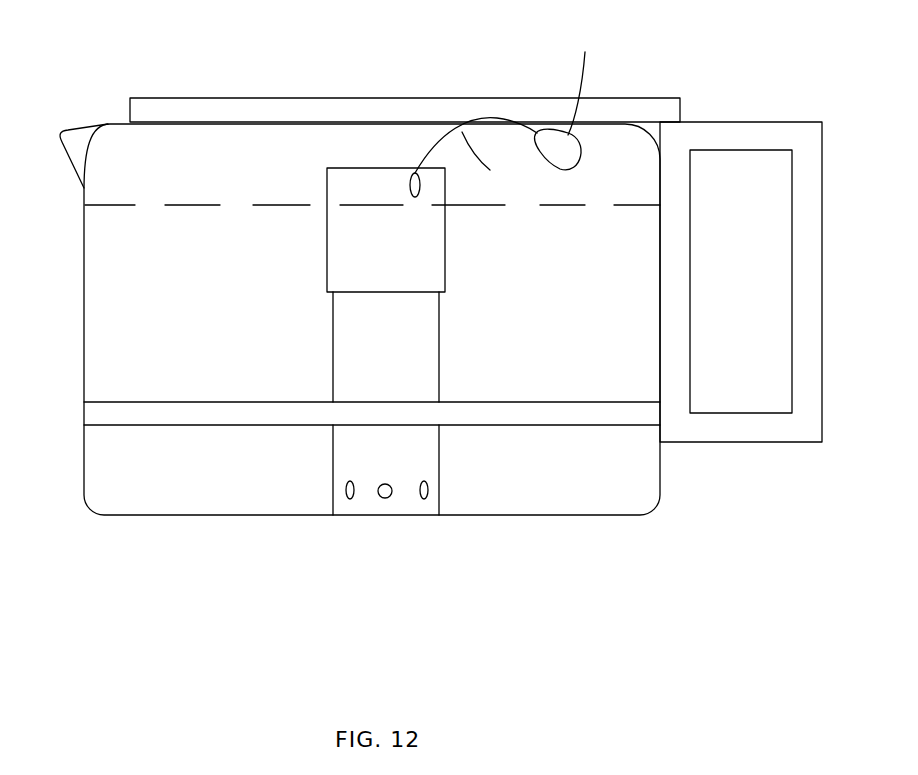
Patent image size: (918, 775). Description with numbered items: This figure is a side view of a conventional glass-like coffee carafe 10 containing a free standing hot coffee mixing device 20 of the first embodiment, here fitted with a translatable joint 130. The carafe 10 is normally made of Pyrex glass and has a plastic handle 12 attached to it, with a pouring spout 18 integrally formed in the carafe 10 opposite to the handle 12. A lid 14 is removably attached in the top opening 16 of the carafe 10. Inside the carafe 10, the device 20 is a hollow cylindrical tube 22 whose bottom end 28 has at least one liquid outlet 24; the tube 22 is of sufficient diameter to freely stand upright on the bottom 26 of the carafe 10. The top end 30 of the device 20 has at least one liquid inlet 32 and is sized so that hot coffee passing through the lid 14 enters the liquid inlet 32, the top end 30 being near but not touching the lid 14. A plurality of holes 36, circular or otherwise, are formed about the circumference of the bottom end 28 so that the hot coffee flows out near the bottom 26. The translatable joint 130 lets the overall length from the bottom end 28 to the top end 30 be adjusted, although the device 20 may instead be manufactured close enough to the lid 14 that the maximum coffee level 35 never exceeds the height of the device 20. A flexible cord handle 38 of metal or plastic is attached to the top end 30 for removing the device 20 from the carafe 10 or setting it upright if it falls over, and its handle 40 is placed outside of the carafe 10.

The coffee carafe 10 is at (125, 547).
The handle 12 is at (750, 442).
The lid 14 is at (215, 99).
The top opening 16 is at (193, 131).
The pouring spout 18 is at (72, 175).
The free standing hot coffee mixing device 20 is at (297, 300).
The hollow cylindrical tube 22 is at (440, 353).
The liquid outlet 24 is at (335, 522).
The bottom 26 is at (480, 513).
The bottom end 28 is at (332, 455).
The top end 30 is at (326, 183).
The liquid inlet 32 is at (395, 168).
The maximum coffee level 35 is at (553, 206).
The holes 36 is at (393, 529).
The flexible cord handle 38 is at (476, 156).
The handle 40 is at (564, 93).
The translatable joint 130 is at (462, 288).